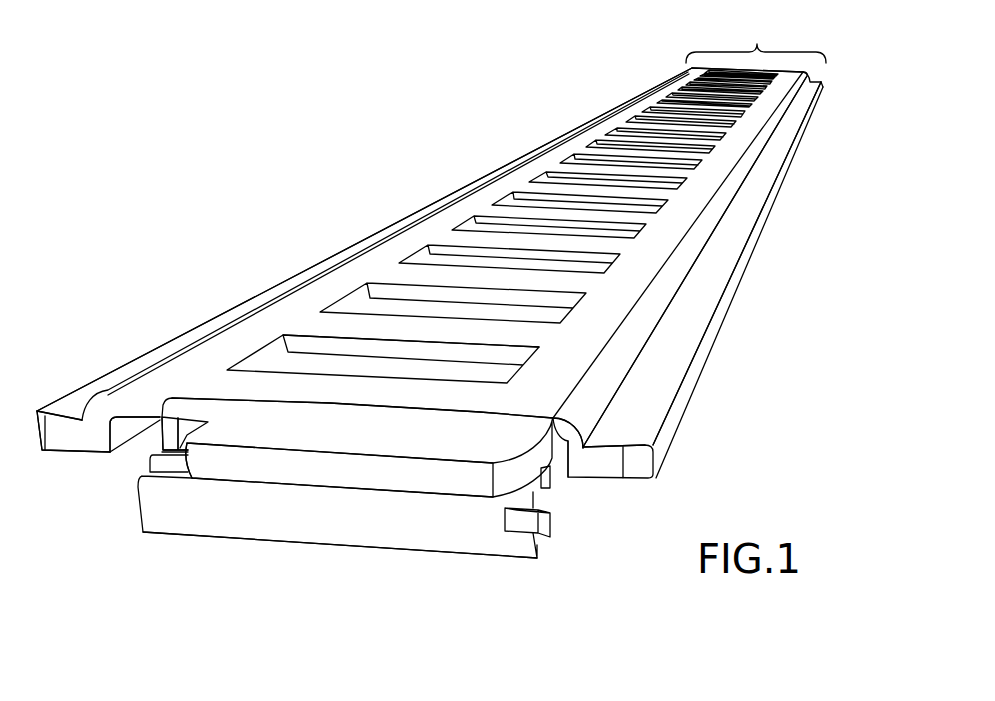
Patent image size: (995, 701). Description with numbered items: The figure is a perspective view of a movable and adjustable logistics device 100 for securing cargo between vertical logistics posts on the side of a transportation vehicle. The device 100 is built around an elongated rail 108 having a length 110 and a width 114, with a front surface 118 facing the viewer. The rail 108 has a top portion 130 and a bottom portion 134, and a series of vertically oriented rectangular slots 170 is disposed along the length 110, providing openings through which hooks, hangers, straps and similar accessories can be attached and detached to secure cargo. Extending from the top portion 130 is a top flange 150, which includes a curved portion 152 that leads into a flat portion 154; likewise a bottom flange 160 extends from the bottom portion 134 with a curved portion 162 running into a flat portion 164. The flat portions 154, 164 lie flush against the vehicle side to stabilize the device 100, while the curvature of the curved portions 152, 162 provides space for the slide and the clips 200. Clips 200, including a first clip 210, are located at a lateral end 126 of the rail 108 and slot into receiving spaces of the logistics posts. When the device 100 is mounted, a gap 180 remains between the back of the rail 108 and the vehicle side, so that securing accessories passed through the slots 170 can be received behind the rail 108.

The movable and adjustable logistics device 100 is at (252, 128).
The rail 108 is at (327, 292).
The length 110 is at (685, 480).
The width 114 is at (756, 36).
The front surface 118 is at (530, 389).
The lateral end 126 is at (305, 563).
The top portion 130 is at (426, 184).
The bottom portion 134 is at (834, 210).
The top flange 150 is at (129, 318).
The curved portion 152 is at (140, 405).
The flat portion 154 is at (67, 405).
The bottom flange 160 is at (597, 505).
The curved portion 162 is at (610, 365).
The flat portion 164 is at (621, 418).
The rectangular slots 170 is at (402, 367).
The gap 180 is at (125, 461).
The clips 200 is at (125, 513).
The first clip 210 is at (443, 548).